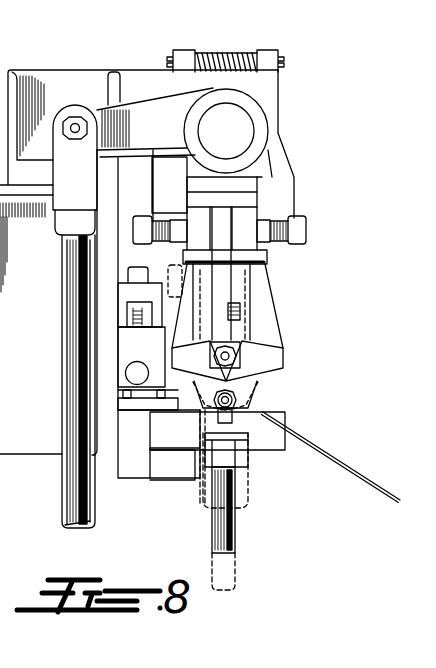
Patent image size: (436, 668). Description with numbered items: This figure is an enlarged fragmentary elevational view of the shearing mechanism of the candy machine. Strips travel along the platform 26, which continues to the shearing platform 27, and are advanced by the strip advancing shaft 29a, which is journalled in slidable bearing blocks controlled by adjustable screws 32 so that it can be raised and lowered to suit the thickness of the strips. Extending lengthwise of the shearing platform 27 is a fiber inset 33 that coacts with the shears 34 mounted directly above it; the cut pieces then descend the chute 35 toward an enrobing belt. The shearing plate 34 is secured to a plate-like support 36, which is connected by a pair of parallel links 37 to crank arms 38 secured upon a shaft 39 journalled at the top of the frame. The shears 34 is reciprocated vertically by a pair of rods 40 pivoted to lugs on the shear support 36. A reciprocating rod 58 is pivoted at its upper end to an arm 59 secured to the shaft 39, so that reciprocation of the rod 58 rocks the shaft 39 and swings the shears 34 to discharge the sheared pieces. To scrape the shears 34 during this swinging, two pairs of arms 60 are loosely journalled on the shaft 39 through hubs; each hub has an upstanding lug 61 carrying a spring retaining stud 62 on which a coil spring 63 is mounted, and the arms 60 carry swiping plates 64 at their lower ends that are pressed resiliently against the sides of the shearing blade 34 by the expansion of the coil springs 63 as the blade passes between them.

The platform 26 is at (190, 403).
The shearing platform 27 is at (262, 412).
The strip advancing shaft 29a is at (127, 377).
The adjustable screw 32 is at (122, 322).
The fiber inset 33 is at (234, 416).
The shears 34 is at (226, 328).
The chute 35 is at (322, 450).
The plate-like support 36 is at (220, 277).
The parallel links 37 is at (245, 213).
The crank arm 38 is at (272, 173).
The shaft 39 is at (233, 127).
The rod 40 is at (232, 538).
The reciprocating rod 58 is at (70, 488).
The arm 59 is at (124, 117).
The arms 60 is at (265, 350).
The upstanding lug 61 is at (181, 52).
The spring retaining stud 62 is at (155, 412).
The coil spring 63 is at (222, 52).
The swiping plate 64 is at (242, 367).